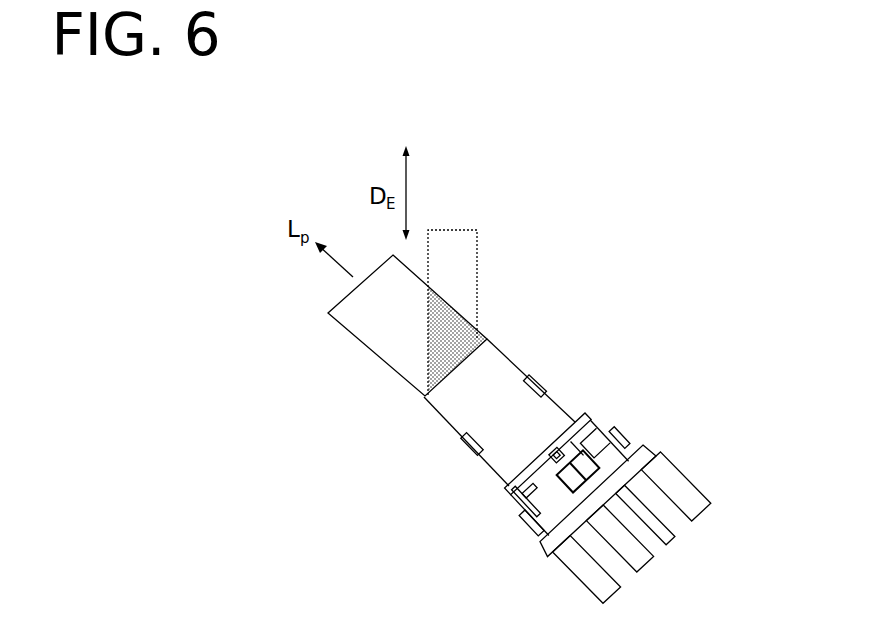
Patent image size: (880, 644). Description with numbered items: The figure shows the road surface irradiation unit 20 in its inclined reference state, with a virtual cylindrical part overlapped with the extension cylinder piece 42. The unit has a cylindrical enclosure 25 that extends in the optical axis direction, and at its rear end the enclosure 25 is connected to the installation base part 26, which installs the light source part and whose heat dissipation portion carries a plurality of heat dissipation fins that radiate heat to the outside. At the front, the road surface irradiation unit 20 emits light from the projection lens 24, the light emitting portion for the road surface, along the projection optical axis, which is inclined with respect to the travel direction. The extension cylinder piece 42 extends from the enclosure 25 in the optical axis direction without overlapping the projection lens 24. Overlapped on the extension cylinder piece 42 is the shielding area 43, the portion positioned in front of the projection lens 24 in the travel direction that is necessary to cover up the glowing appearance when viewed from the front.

The road surface irradiation unit 20 is at (611, 395).
The projection lens 24 is at (420, 370).
The enclosure 25 is at (465, 413).
The installation base part 26 is at (530, 553).
The extension cylinder piece 42 is at (393, 328).
The shielding area 43 is at (453, 265).